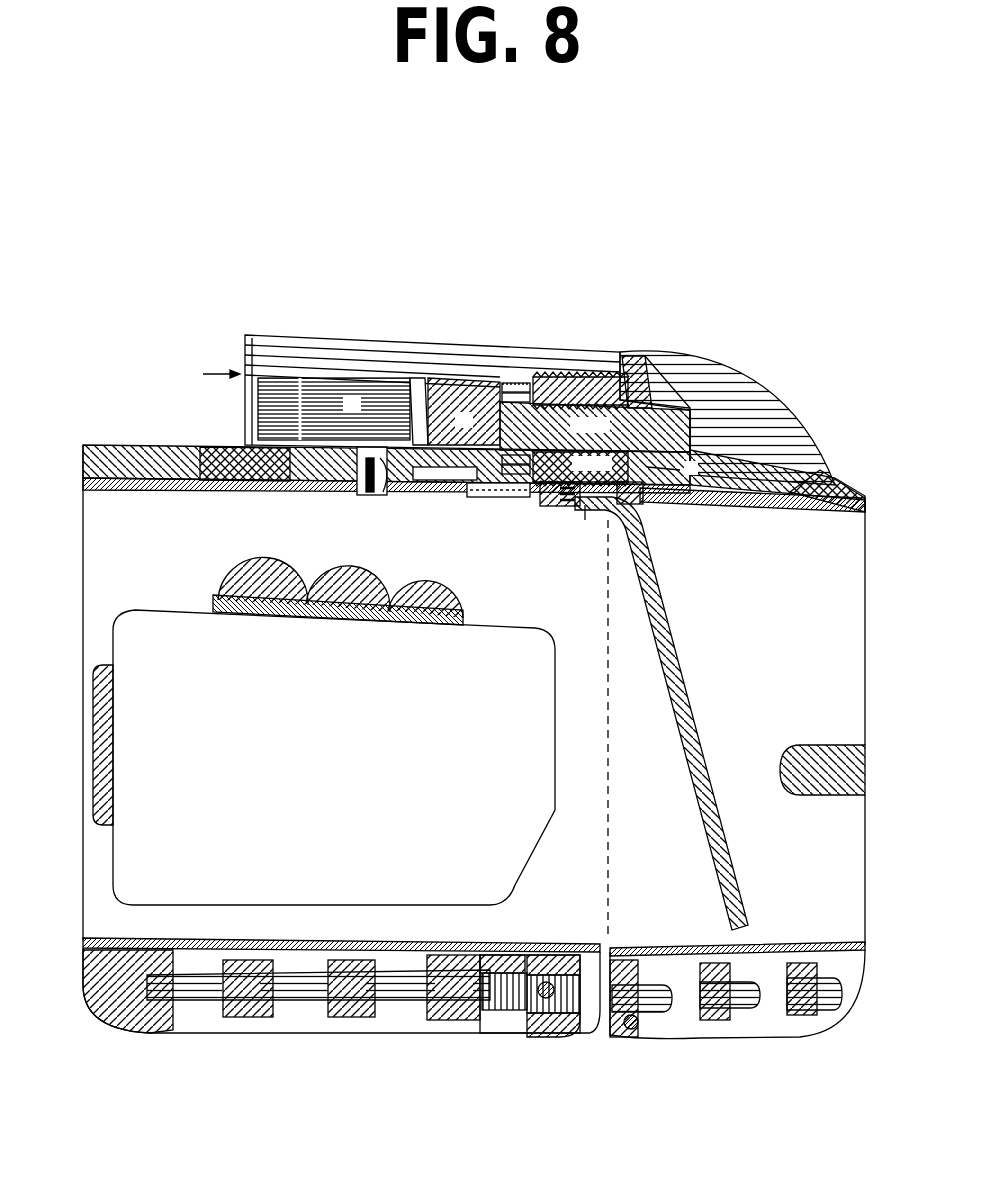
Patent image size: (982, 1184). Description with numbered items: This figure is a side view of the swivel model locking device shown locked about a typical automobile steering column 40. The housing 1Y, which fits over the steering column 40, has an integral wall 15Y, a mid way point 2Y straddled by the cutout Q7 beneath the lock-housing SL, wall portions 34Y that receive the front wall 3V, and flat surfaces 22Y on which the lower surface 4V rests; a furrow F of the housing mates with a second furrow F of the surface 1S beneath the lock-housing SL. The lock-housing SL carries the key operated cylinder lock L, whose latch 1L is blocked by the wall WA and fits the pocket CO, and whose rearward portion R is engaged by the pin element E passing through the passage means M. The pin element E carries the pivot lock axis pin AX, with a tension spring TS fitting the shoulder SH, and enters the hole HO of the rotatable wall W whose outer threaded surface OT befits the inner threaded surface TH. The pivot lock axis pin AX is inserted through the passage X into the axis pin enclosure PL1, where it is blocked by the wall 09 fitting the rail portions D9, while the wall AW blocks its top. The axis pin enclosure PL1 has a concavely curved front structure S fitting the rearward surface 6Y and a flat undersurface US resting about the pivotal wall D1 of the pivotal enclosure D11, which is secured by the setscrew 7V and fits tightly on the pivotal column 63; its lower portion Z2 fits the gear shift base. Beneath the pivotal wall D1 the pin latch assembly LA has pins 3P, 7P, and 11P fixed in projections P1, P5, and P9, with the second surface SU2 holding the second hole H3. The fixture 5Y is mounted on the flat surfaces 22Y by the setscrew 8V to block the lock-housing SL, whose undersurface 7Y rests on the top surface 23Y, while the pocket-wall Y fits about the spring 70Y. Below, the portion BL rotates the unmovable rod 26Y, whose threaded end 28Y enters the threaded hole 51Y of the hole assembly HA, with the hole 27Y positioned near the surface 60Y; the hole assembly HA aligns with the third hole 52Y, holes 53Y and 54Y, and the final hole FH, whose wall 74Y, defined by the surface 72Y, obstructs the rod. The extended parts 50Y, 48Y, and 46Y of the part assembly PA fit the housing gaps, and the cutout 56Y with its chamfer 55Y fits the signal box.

The lock-housing SL is at (296, 333).
The shoulder SH is at (519, 383).
The tension spring TS is at (533, 378).
The rearward surface 6Y is at (562, 378).
The inner threaded surface TH is at (600, 362).
The outer threaded surface OT is at (580, 381).
The hole HO is at (636, 390).
The concavely curved front structure S is at (655, 395).
The wall AW is at (665, 400).
The passage means X is at (667, 407).
The axis pin enclosure PL1 is at (727, 400).
The wall 09 is at (757, 417).
The pivotal enclosure D11 is at (837, 497).
The pivotal column 63 is at (845, 493).
The pivotal wall D1 is at (870, 505).
The passage means M is at (211, 375).
The cutout Q7 is at (238, 440).
The integral wall 15Y is at (125, 446).
The housing 1Y is at (82, 462).
The mid way point 2Y is at (141, 468).
The steering column 40 is at (103, 487).
The wall WA is at (213, 460).
The furrow portion F is at (273, 488).
The surface 1S is at (278, 503).
The latch 1L is at (363, 496).
The pocket portion CO is at (390, 498).
The front wall 3V is at (460, 498).
The wall portion 34Y is at (462, 500).
The flat surface 22Y is at (512, 500).
The spring 70Y is at (553, 490).
The setscrew 8V is at (583, 506).
The pocket-wall Y is at (543, 512).
The lower surface 4V is at (592, 542).
The fixture 5Y is at (590, 506).
The undersurface 7Y is at (622, 540).
The setscrew 7V is at (645, 500).
The rail portion D9 is at (683, 513).
The flat undersurface US is at (677, 513).
The rotatable wall W is at (673, 469).
The cylinder lock L is at (334, 409).
The rearward portion R is at (419, 411).
The pin element E is at (464, 411).
The pivot lock axis pin AX is at (595, 427).
The top surface 23Y is at (581, 469).
The chamfer 55Y is at (413, 627).
The cutout 56Y is at (548, 768).
The hole assembly HA is at (582, 902).
The projection P1 is at (620, 940).
The surface 60Y is at (543, 963).
The surface 72Y is at (88, 942).
The final hole FH is at (190, 978).
The hole 27Y is at (537, 985).
The hole 54Y is at (318, 985).
The hole 53Y is at (347, 988).
The third hole 52Y is at (454, 988).
The wall 74Y is at (177, 993).
The extended part 46Y is at (247, 1018).
The portion below the housing BL is at (307, 1027).
The extended part 48Y is at (350, 1030).
The extended part 50Y is at (450, 1022).
The threaded hole 51Y is at (597, 1002).
The unmovable rod 26Y is at (292, 1035).
The part assembly PA is at (452, 1035).
The threaded end 28Y is at (500, 1036).
The second hole H3 is at (622, 1040).
The second surface SU2 is at (638, 1035).
The pin latch assembly LA is at (653, 1040).
The pin 3P is at (663, 1005).
The projection P5 is at (712, 1008).
The pin 7P is at (740, 1008).
The projection P9 is at (807, 1012).
The pin 11P is at (833, 1003).
The portion Z2 is at (863, 977).